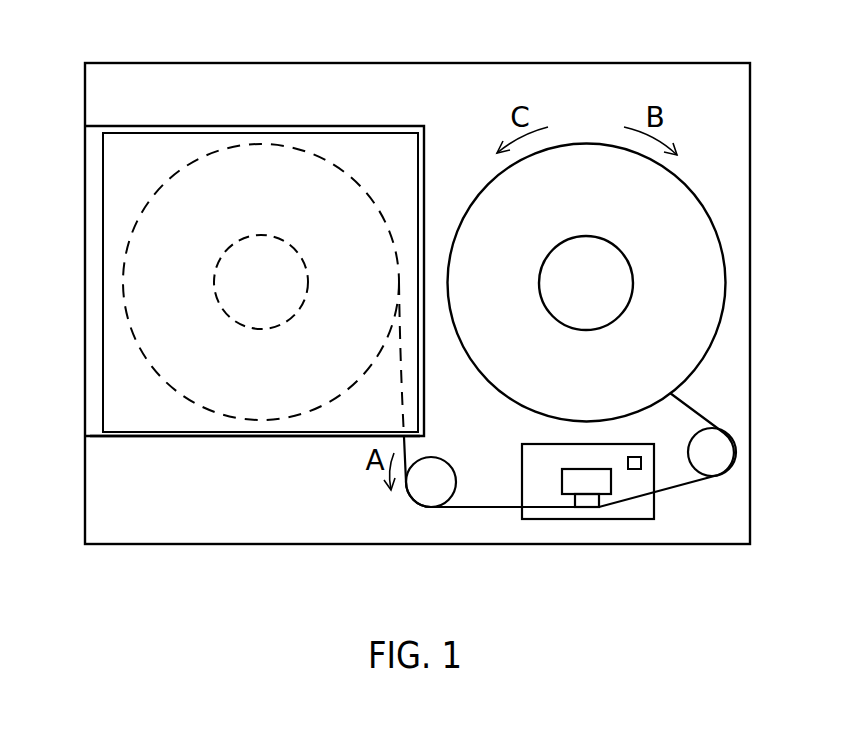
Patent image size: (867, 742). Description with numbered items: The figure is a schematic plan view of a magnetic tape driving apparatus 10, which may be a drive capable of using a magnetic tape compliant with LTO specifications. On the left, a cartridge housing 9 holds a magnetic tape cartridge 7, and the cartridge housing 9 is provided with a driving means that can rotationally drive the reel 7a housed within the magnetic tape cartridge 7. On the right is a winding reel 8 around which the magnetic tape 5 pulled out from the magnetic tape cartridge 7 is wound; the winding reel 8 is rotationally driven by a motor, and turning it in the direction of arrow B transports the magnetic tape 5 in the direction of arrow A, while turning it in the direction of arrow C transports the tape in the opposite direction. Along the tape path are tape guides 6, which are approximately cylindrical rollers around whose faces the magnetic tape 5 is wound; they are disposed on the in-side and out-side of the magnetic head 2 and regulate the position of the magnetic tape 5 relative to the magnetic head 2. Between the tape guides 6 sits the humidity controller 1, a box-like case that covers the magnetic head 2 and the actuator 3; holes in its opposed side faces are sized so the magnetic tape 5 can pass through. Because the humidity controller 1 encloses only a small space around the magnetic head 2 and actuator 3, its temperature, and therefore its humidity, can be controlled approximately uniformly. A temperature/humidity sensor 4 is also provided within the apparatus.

The magnetic tape driving apparatus 10 is at (588, 63).
The magnetic tape cartridge 7 is at (117, 358).
The reel 7a is at (127, 284).
The cartridge housing 9 is at (140, 437).
The winding reel 8 is at (707, 285).
The magnetic tape 5 is at (477, 508).
The tape guides 6 is at (430, 493).
The humidity controller 1 is at (537, 520).
The magnetic head 2 is at (585, 508).
The actuator 3 is at (608, 481).
The temperature/humidity sensor 4 is at (635, 470).